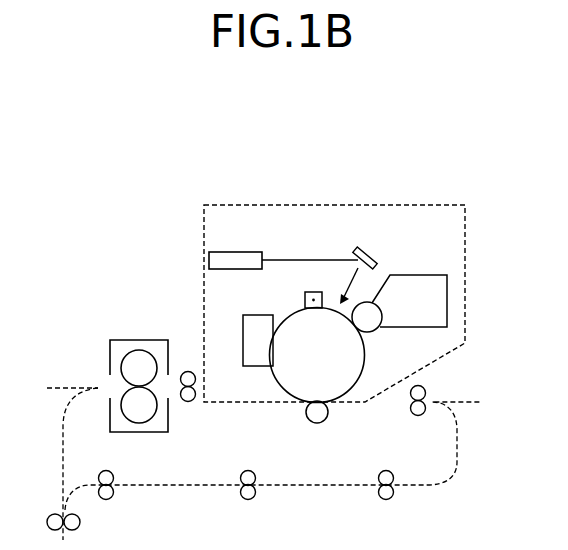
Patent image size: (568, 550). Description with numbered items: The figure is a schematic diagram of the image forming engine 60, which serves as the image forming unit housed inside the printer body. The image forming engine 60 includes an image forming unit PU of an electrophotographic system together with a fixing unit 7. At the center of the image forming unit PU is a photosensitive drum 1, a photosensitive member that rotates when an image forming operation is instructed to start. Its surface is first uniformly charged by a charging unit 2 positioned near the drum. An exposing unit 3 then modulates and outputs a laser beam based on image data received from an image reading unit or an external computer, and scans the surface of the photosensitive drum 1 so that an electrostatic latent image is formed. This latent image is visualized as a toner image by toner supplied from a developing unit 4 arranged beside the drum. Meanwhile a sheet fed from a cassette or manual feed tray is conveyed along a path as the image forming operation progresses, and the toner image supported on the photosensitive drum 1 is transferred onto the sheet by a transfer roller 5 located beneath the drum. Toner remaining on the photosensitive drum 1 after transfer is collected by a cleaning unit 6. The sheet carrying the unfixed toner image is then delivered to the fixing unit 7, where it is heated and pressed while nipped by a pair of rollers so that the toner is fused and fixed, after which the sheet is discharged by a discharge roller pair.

The photosensitive drum 1 is at (365, 352).
The charging unit 2 is at (312, 292).
The exposing unit 3 is at (237, 252).
The developing unit 4 is at (413, 275).
The transfer roller 5 is at (317, 423).
The cleaning unit 6 is at (258, 315).
The fixing unit 7 is at (142, 340).
The image forming engine 60 is at (160, 228).
The image forming unit PU is at (467, 220).